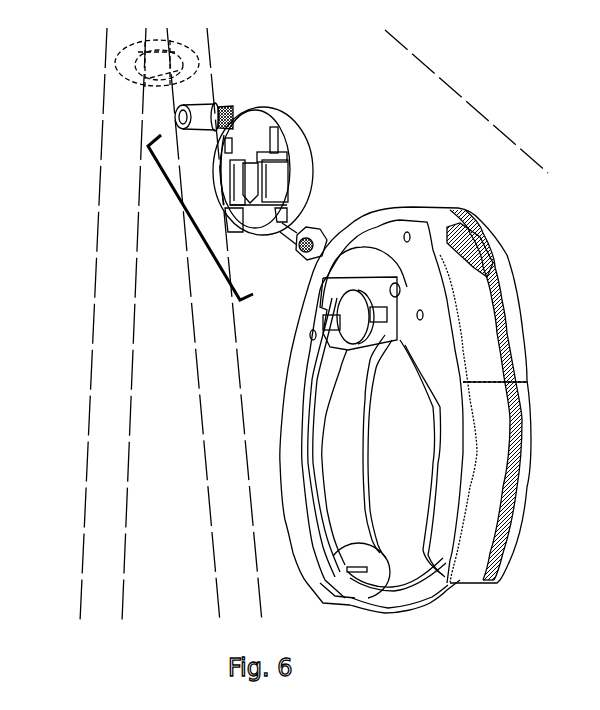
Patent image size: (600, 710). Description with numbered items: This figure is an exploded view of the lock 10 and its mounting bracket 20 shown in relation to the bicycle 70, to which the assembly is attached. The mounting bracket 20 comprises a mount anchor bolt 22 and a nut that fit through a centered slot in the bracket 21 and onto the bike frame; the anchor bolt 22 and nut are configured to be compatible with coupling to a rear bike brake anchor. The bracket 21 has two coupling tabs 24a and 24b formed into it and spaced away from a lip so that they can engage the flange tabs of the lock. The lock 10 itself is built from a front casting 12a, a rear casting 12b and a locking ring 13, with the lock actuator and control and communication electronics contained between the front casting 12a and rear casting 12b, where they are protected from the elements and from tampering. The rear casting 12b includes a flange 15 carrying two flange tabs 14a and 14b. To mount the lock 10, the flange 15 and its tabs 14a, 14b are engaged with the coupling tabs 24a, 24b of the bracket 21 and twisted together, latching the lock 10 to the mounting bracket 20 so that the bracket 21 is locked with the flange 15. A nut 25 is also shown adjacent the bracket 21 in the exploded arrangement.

The lock 10 is at (397, 200).
The front casting 12a is at (517, 523).
The rear casting 12b is at (490, 343).
The locking ring 13 is at (413, 583).
The flange tab 14a is at (330, 338).
The flange tab 14b is at (390, 330).
The flange 15 is at (350, 287).
The mounting bracket 20 is at (197, 222).
The bracket 21 is at (272, 108).
The mount anchor bolt 22 is at (200, 108).
The coupling tab 24a is at (237, 162).
The coupling tab 24b is at (282, 178).
The nut 25 is at (270, 237).
The bicycle 70 is at (97, 239).